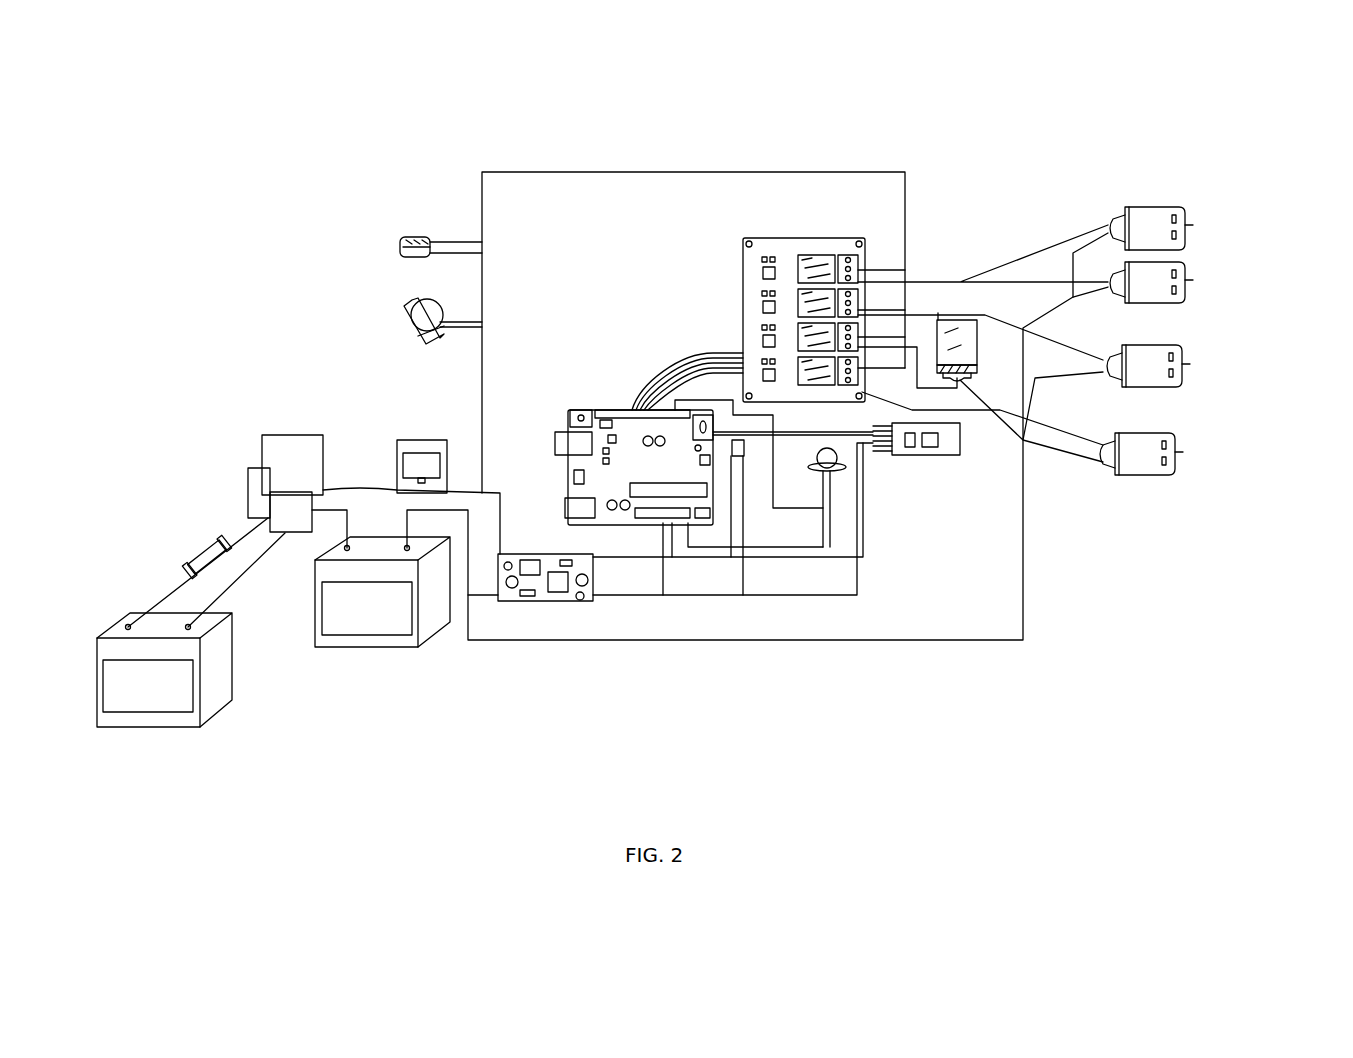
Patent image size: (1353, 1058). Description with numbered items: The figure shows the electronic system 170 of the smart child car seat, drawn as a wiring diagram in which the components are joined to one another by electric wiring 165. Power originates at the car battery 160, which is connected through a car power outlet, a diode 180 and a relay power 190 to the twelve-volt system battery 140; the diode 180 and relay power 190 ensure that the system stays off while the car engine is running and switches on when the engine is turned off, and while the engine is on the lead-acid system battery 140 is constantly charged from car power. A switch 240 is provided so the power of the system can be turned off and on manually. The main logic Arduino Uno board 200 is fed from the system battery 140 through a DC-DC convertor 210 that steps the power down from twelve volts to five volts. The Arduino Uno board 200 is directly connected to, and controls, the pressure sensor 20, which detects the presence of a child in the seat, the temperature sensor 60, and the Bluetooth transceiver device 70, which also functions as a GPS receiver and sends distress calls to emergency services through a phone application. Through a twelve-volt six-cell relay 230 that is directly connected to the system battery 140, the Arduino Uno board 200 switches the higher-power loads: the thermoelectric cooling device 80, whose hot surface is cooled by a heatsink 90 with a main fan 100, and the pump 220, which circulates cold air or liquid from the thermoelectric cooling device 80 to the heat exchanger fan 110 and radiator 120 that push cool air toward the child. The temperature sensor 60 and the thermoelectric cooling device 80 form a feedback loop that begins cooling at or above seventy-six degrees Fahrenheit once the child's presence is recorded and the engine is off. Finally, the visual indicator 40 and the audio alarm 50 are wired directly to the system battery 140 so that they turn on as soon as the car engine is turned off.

The pressure sensor 20 is at (845, 482).
The visual indicator 40 is at (398, 247).
The audio alarm 50 is at (412, 322).
The temperature sensor 60 is at (752, 461).
The Bluetooth transceiver device 70 is at (968, 460).
The thermoelectric cooling device 80 is at (937, 310).
The heatsink 90 is at (1200, 379).
The main fan 100 is at (1180, 370).
The heat exchanger fan 110 is at (1211, 255).
The radiator 120 is at (1185, 228).
The system battery 140 is at (372, 648).
The car battery 160 is at (150, 728).
The electric wiring 165 is at (482, 172).
The electronic system 170 is at (320, 128).
The diode 180 is at (192, 552).
The relay power 190 is at (292, 436).
The main logic Arduino Uno board 200 is at (605, 410).
The DC-DC convertor 210 is at (556, 612).
The pump 220 is at (1150, 475).
The relay 230 is at (815, 232).
The switch 240 is at (420, 440).